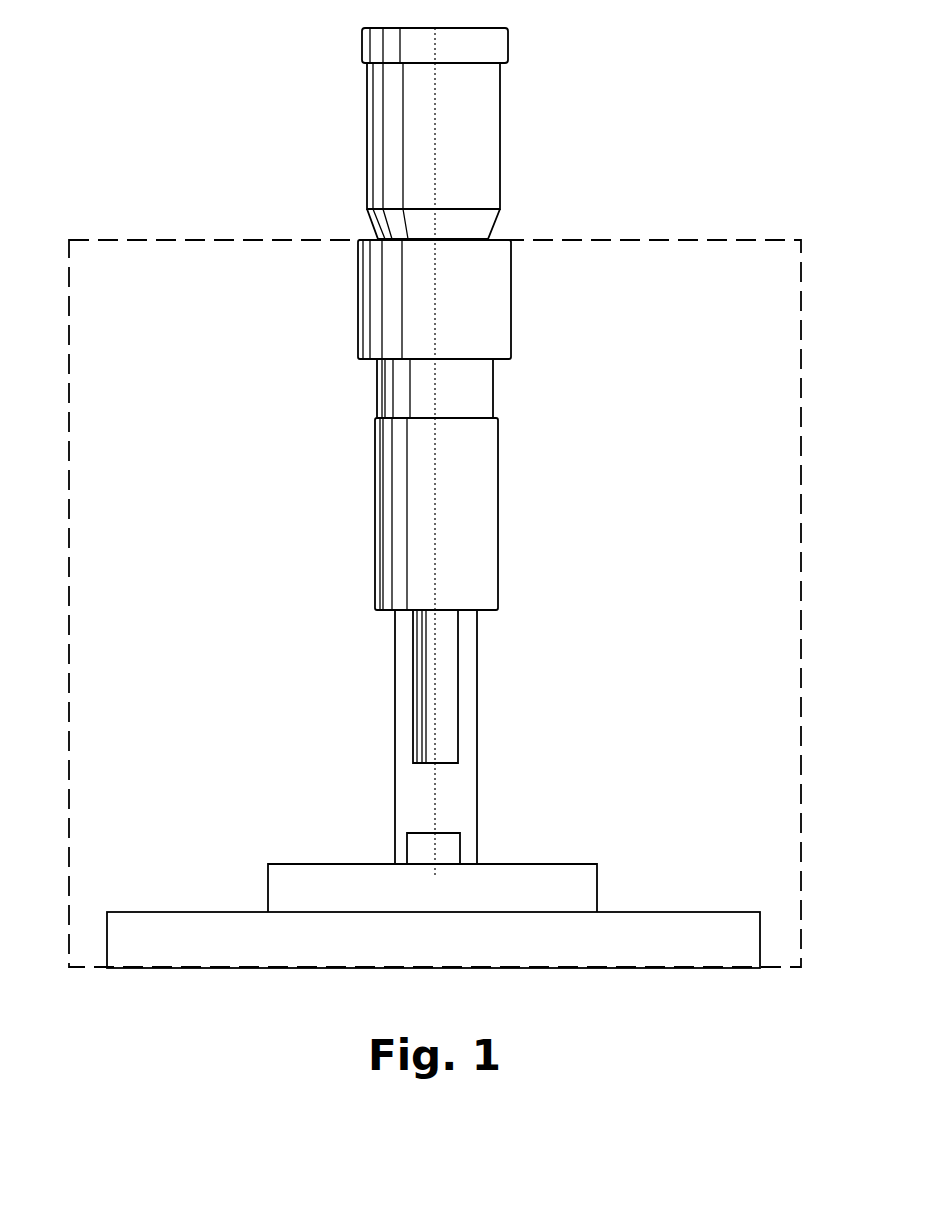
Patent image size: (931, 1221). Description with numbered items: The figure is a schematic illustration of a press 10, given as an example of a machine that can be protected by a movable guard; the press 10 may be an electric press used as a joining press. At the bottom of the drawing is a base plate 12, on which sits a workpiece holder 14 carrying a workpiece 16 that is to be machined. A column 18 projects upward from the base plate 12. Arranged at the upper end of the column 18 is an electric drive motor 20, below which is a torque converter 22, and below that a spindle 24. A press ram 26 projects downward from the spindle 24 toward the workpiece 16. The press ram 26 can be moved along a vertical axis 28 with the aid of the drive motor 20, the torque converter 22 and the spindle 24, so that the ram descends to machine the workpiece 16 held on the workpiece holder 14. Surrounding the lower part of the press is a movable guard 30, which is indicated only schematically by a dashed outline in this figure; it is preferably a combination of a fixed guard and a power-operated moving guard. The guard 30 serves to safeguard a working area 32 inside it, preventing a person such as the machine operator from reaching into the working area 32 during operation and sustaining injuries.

The press 10 is at (677, 167).
The base plate 12 is at (702, 937).
The workpiece holder 14 is at (572, 885).
The workpiece 16 is at (450, 848).
The column 18 is at (468, 680).
The electric drive motor 20 is at (487, 142).
The torque converter 22 is at (500, 302).
The spindle 24 is at (487, 495).
The press ram 26 is at (428, 642).
The vertical axis 28 is at (432, 780).
The movable guard 30 is at (197, 239).
The working area 32 is at (700, 732).